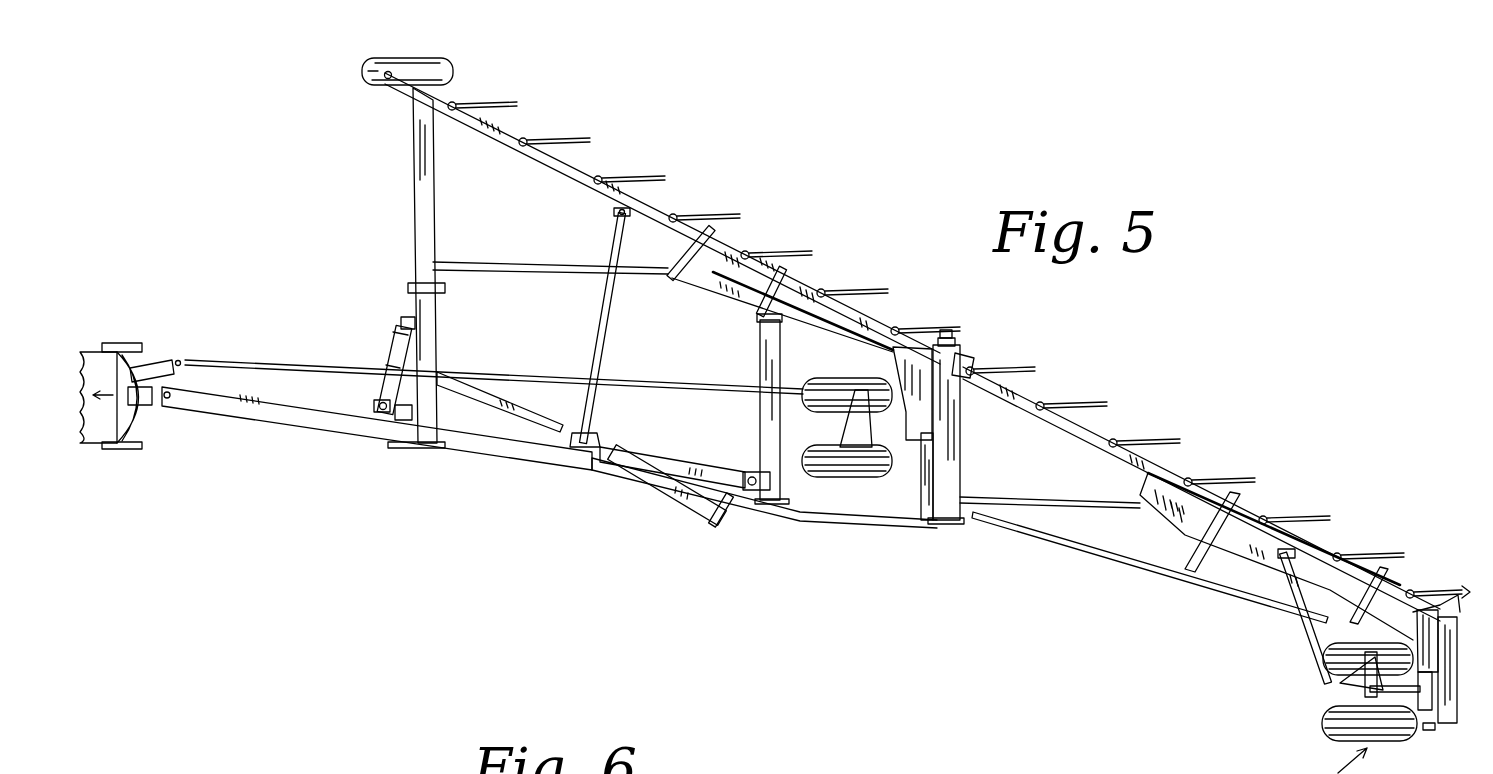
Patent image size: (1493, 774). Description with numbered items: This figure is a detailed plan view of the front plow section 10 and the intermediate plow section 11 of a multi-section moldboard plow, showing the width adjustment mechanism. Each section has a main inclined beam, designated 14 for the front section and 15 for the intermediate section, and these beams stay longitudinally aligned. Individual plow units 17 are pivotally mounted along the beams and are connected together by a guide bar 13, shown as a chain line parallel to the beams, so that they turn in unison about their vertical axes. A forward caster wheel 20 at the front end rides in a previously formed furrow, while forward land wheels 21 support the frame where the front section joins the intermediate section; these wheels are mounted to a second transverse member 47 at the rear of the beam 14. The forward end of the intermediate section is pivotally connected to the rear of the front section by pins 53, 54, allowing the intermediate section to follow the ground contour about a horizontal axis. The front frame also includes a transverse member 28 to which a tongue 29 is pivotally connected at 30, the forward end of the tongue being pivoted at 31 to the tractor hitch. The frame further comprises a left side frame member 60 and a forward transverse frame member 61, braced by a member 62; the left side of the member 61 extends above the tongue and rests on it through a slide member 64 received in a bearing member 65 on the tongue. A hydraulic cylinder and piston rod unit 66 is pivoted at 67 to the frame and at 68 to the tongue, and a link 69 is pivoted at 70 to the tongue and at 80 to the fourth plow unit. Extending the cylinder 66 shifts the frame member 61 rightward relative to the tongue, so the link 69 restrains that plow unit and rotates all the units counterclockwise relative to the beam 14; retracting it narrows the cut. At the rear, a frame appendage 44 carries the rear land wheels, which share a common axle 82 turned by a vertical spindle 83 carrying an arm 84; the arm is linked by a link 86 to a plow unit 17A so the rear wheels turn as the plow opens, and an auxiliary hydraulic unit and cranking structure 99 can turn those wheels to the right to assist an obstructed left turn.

The front plow section 10 is at (744, 184).
The intermediate plow section 11 is at (1180, 410).
The guide bar 13 is at (523, 165).
The main inclined beam 14 is at (735, 240).
The main inclined beam 15 is at (1100, 430).
The plow units 17 is at (572, 140).
The plow unit 17A is at (1380, 550).
The forward caster wheel 20 is at (455, 72).
The forward land wheels 21 is at (818, 369).
The transverse member 28 is at (782, 422).
The tongue 29 is at (303, 415).
The pivotal connection 30 is at (752, 472).
The pivotal connection 31 is at (173, 407).
The frame appendage 44 is at (1453, 717).
The second transverse member 47 is at (922, 470).
The pin 53 is at (957, 341).
The pin 54 is at (947, 522).
The left side frame member 60 is at (810, 517).
The forward transverse frame member 61 is at (437, 210).
The brace member 62 is at (663, 493).
The slide member 64 is at (390, 437).
The bearing member 65 is at (442, 408).
The hydraulic cylinder and piston rod unit 66 is at (373, 349).
The pivotal connection 67 is at (403, 322).
The pivotal connection 68 is at (377, 408).
The link 69 is at (588, 342).
The pivotal connection 70 is at (582, 463).
The pivotal connection 80 is at (612, 212).
The common axle 82 is at (1360, 698).
The vertical spindle 83 is at (1367, 690).
The arm 84 is at (1337, 683).
The link 86 is at (1303, 618).
The auxiliary hydraulic unit and cranking structure 99 is at (1340, 645).